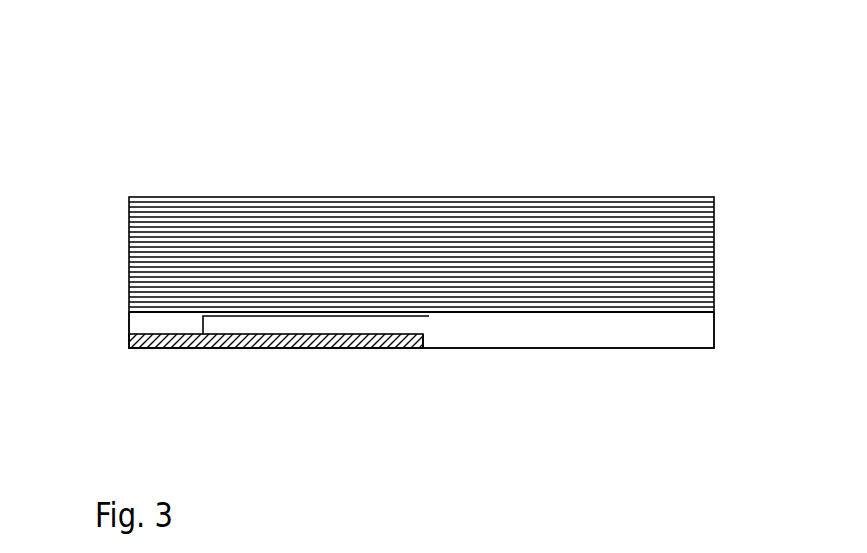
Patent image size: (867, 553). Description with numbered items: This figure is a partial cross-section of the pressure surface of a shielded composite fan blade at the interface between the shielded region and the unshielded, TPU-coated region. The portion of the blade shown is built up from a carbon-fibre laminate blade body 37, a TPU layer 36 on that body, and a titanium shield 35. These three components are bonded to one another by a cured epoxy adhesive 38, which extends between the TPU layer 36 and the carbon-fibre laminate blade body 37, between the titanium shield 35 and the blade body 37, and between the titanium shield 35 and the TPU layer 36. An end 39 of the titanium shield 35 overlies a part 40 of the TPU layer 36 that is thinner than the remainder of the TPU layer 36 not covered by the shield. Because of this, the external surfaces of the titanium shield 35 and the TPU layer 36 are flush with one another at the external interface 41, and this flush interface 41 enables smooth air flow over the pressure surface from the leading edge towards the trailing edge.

The titanium shield 35 is at (128, 341).
The TPU layer 36 is at (714, 330).
The carbon-fibre laminate blade body 37 is at (714, 263).
The cured epoxy adhesive 38 is at (128, 323).
The end of the titanium shield 39 is at (313, 359).
The part of the TPU layer 40 is at (278, 322).
The external interface 41 is at (422, 350).